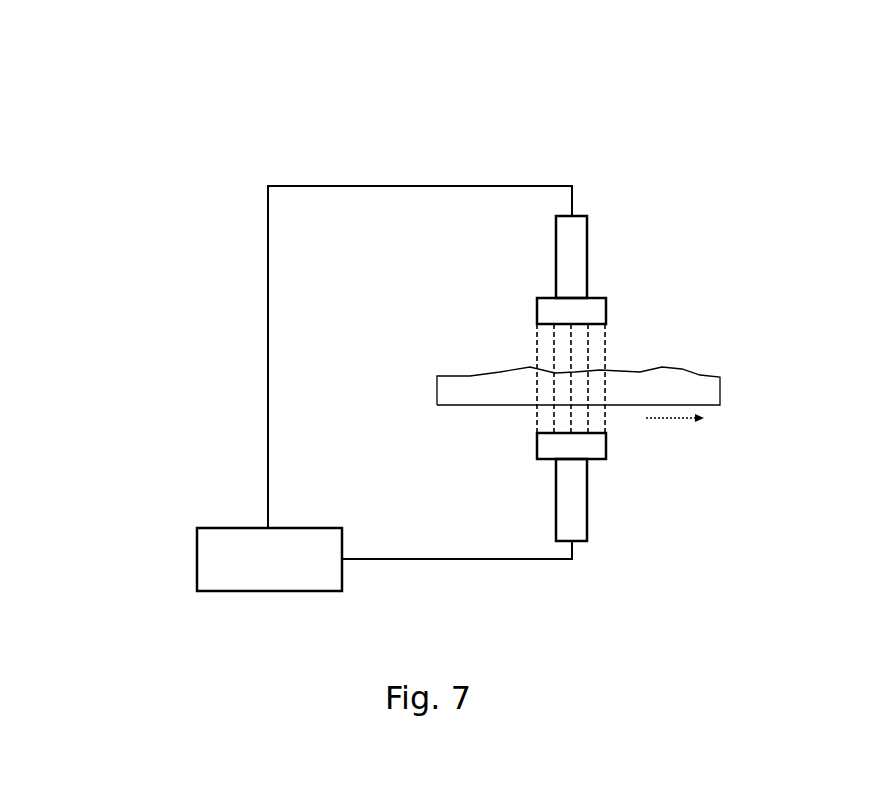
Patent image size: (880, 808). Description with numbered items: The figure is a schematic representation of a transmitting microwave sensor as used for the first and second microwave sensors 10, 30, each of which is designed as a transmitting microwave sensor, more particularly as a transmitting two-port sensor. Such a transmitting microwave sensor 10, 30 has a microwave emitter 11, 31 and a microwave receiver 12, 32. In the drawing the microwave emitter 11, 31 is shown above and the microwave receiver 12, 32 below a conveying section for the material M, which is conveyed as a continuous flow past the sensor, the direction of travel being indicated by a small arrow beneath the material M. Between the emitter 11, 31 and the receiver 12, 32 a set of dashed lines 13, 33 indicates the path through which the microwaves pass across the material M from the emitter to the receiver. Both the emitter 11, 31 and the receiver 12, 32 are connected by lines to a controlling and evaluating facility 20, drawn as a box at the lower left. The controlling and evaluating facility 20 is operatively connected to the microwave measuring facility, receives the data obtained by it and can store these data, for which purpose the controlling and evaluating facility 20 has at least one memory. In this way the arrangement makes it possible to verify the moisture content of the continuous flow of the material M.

The first microwave sensor 10 is at (311, 291).
The second microwave sensor 30 is at (262, 141).
The microwave emitter 11 is at (629, 270).
The microwave emitter 31 is at (582, 310).
The microwave receiver 12 is at (650, 487).
The microwave receiver 32 is at (586, 447).
The plasma / discharge region 13 is at (650, 378).
The plasma / discharge region 33 is at (608, 358).
The controlling and evaluating facility 20 is at (269, 559).
The material M is at (481, 388).